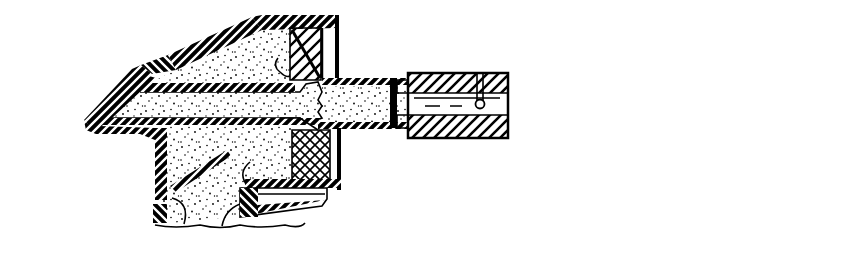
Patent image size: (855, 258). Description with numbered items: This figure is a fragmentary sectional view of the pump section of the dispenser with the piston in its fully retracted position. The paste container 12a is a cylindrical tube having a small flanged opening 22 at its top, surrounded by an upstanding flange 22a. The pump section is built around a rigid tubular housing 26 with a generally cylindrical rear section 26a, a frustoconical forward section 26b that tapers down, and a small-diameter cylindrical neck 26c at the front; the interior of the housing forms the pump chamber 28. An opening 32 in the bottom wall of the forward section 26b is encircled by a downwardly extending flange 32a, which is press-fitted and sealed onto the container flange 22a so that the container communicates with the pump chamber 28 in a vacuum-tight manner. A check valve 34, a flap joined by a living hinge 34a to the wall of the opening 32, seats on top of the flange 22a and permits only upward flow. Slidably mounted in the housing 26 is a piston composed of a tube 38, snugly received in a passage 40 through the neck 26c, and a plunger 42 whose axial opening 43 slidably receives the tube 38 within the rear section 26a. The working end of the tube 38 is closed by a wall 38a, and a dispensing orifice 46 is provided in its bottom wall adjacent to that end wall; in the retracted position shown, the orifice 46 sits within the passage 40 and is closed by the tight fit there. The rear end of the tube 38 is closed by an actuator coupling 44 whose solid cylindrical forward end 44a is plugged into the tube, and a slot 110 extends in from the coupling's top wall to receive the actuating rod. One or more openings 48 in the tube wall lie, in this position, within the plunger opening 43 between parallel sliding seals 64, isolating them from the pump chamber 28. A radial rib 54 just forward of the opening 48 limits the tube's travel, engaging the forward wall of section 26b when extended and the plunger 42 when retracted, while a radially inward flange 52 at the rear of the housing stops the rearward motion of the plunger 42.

The paste container 12a is at (152, 217).
The container opening 22 is at (218, 226).
The container flange 22a is at (188, 222).
The tubular housing 26 is at (334, 21).
The rear housing section 26a is at (254, 14).
The forward housing section 26b is at (195, 47).
The housing neck 26c is at (132, 72).
The pump chamber 28 is at (247, 70).
The housing opening 32 is at (266, 159).
The housing flange 32a is at (376, 217).
The check valve 34 is at (200, 161).
The living hinge 34a is at (155, 190).
The tube 38 is at (168, 68).
The forward end wall 38a is at (100, 107).
The passage 40 is at (122, 92).
The plunger 42 is at (318, 56).
The plunger opening 43 is at (338, 86).
The actuator coupling 44 is at (510, 79).
The coupling forward end 44a is at (405, 80).
The dispensing orifice 46 is at (96, 137).
The tube opening 48 is at (344, 108).
The flange 52 is at (342, 180).
The radial rib 54 is at (271, 54).
The sliding seals 64 is at (341, 143).
The slot 110 is at (481, 73).